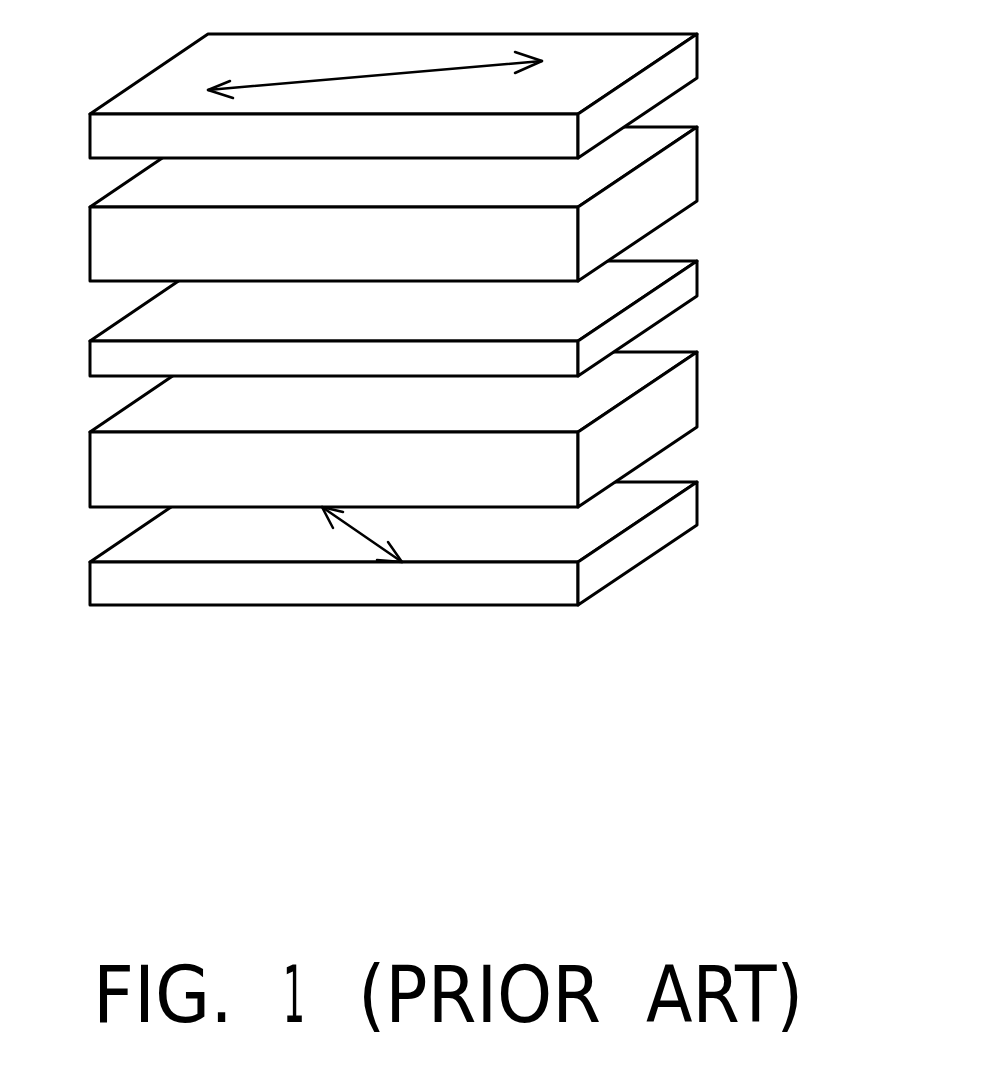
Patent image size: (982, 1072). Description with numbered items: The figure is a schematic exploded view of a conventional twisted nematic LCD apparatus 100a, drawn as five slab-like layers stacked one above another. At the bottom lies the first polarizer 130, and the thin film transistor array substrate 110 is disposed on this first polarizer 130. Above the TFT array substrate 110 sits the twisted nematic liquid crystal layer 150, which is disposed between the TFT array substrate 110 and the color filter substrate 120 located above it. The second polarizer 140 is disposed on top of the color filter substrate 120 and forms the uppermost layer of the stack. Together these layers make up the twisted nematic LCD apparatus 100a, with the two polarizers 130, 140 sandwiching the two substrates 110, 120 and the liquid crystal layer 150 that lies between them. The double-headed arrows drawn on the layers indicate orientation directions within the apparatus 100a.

The twisted nematic LCD apparatus 100a is at (855, 658).
The thin film transistor array substrate 110 is at (660, 412).
The color filter substrate 120 is at (667, 178).
The first polarizer 130 is at (697, 502).
The second polarizer 140 is at (681, 63).
The twisted nematic liquid crystal layer 150 is at (675, 292).